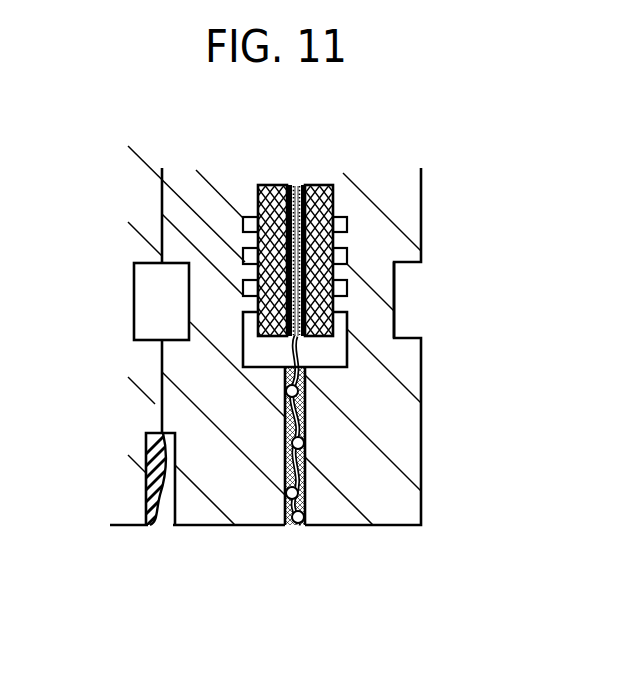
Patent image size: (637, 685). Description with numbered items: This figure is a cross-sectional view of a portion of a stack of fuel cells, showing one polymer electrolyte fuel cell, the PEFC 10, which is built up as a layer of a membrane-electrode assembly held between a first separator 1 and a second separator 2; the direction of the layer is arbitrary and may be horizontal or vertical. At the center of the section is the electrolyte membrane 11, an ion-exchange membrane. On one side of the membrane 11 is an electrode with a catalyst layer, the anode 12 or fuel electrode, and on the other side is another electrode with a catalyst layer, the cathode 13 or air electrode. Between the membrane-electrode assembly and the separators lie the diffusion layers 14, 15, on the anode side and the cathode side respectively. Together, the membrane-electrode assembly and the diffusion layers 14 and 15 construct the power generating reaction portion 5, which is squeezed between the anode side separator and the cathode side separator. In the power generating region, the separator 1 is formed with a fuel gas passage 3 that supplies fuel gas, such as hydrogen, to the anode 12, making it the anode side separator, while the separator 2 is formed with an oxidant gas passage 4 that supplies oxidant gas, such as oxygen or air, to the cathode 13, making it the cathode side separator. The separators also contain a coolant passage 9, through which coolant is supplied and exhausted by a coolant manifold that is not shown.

The first separator 1 is at (223, 413).
The second separator 2 is at (363, 417).
The fuel gas passage 3 is at (243, 228).
The oxidant gas passage 4 is at (347, 228).
The power generating reaction portion 5 is at (298, 212).
The coolant passage 9 is at (160, 294).
The PEFC 10 is at (421, 533).
The electrolyte membrane 11 is at (297, 186).
The anode 12 is at (290, 185).
The cathode 13 is at (305, 186).
The diffusion layer 14 is at (258, 186).
The diffusion layer 15 is at (354, 238).